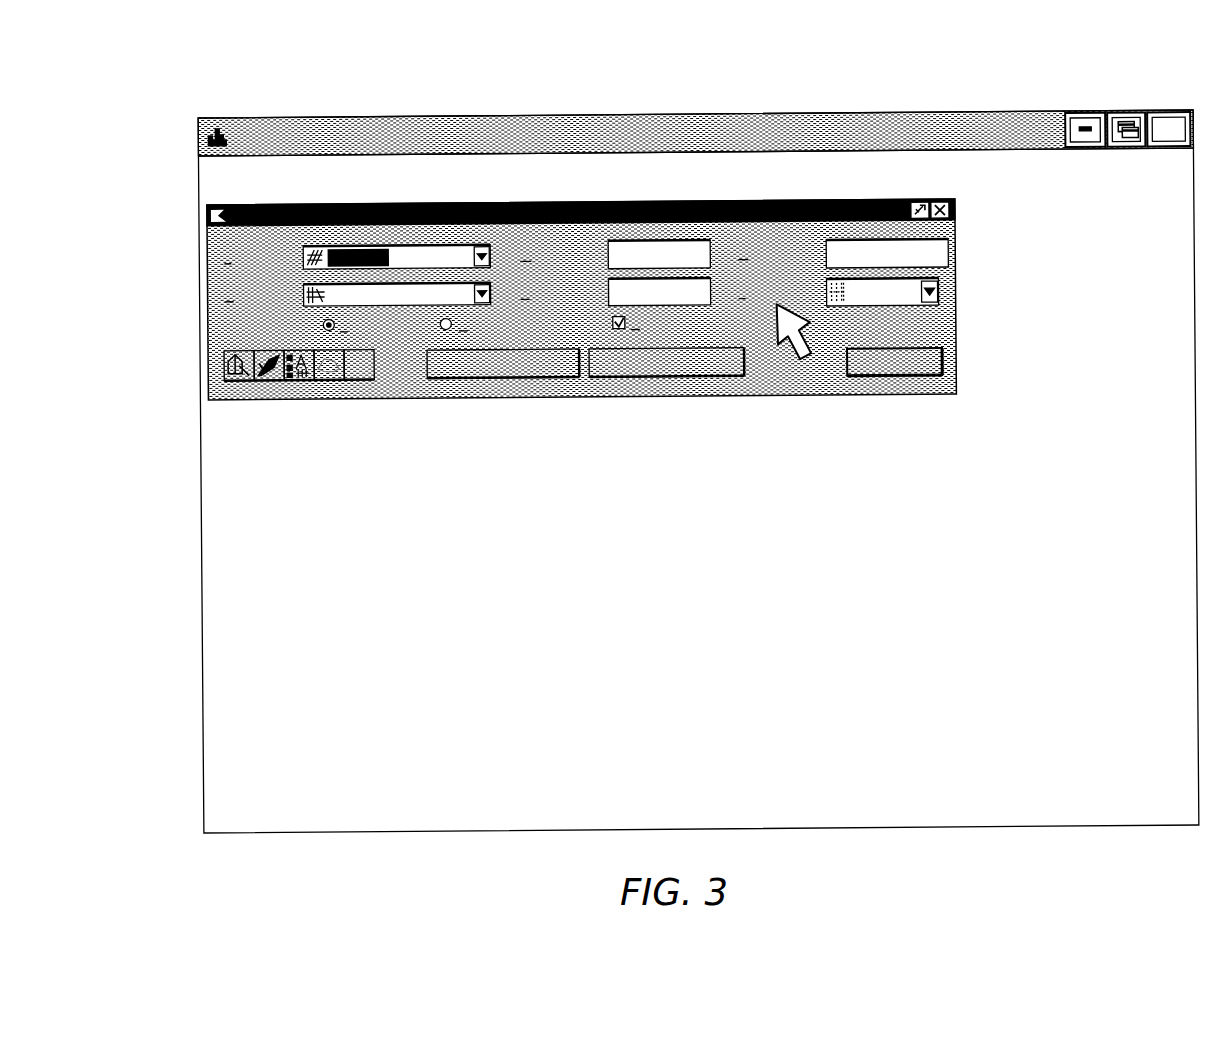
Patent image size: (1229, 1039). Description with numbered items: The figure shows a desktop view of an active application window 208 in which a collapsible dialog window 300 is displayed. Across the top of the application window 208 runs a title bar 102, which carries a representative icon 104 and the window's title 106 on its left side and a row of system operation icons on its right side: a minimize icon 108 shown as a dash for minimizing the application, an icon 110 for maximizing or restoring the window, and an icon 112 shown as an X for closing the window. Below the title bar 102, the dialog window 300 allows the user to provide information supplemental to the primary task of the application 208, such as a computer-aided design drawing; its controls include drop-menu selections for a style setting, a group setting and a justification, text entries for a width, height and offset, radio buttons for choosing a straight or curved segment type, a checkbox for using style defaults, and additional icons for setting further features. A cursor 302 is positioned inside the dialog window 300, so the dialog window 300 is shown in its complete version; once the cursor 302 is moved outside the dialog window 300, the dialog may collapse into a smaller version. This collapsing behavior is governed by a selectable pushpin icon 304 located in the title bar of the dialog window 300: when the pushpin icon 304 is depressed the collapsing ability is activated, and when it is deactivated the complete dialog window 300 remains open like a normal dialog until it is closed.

The title bar 102 is at (497, 125).
The representative icon 104 is at (213, 113).
The title 106 is at (283, 125).
The minimize icon 108 is at (1078, 118).
The maximize/restore icon 110 is at (1117, 115).
The close icon 112 is at (1160, 115).
The application window 208 is at (200, 583).
The dialog window 300 is at (220, 310).
The cursor 302 is at (777, 398).
The pushpin icon 304 is at (920, 222).